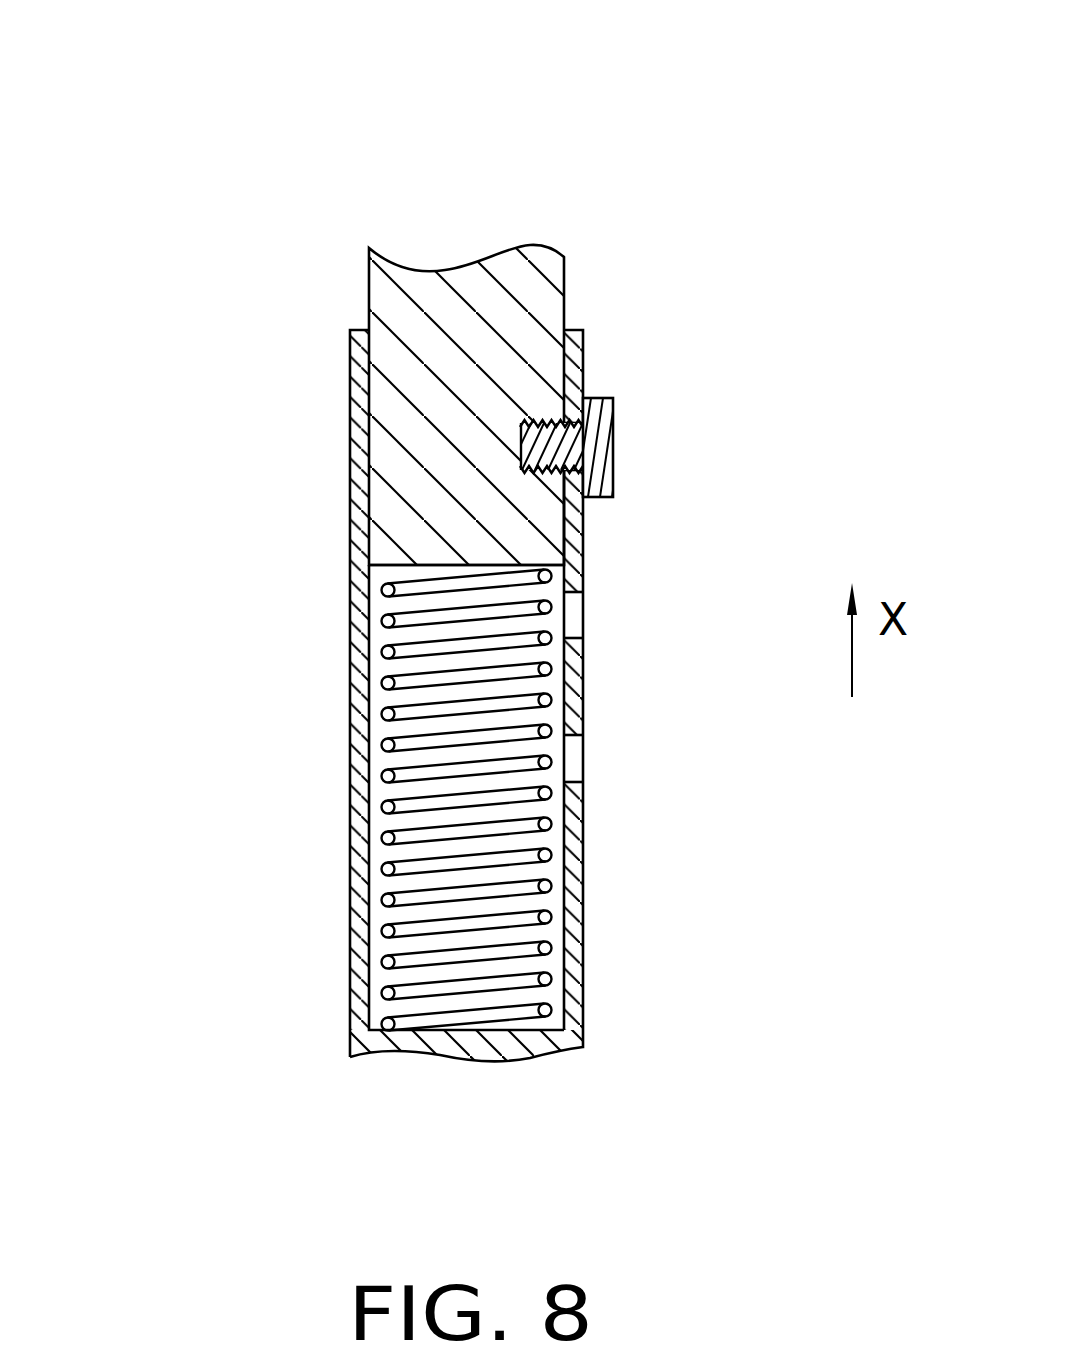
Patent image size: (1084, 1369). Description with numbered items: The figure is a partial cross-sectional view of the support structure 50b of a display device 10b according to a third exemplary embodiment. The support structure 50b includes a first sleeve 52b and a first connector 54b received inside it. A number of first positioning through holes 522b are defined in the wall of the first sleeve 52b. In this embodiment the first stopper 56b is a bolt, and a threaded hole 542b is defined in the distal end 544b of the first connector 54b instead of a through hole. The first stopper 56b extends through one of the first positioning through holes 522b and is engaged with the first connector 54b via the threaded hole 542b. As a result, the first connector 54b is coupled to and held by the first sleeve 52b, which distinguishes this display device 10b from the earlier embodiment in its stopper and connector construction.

The display device 10b is at (285, 72).
The support structure 50b is at (200, 213).
The first sleeve 52b is at (360, 382).
The first positioning through holes 522b is at (577, 392).
The first connector 54b is at (385, 283).
The threaded hole 542b is at (567, 510).
The distal end 544b is at (392, 513).
The first stopper 56b is at (607, 436).